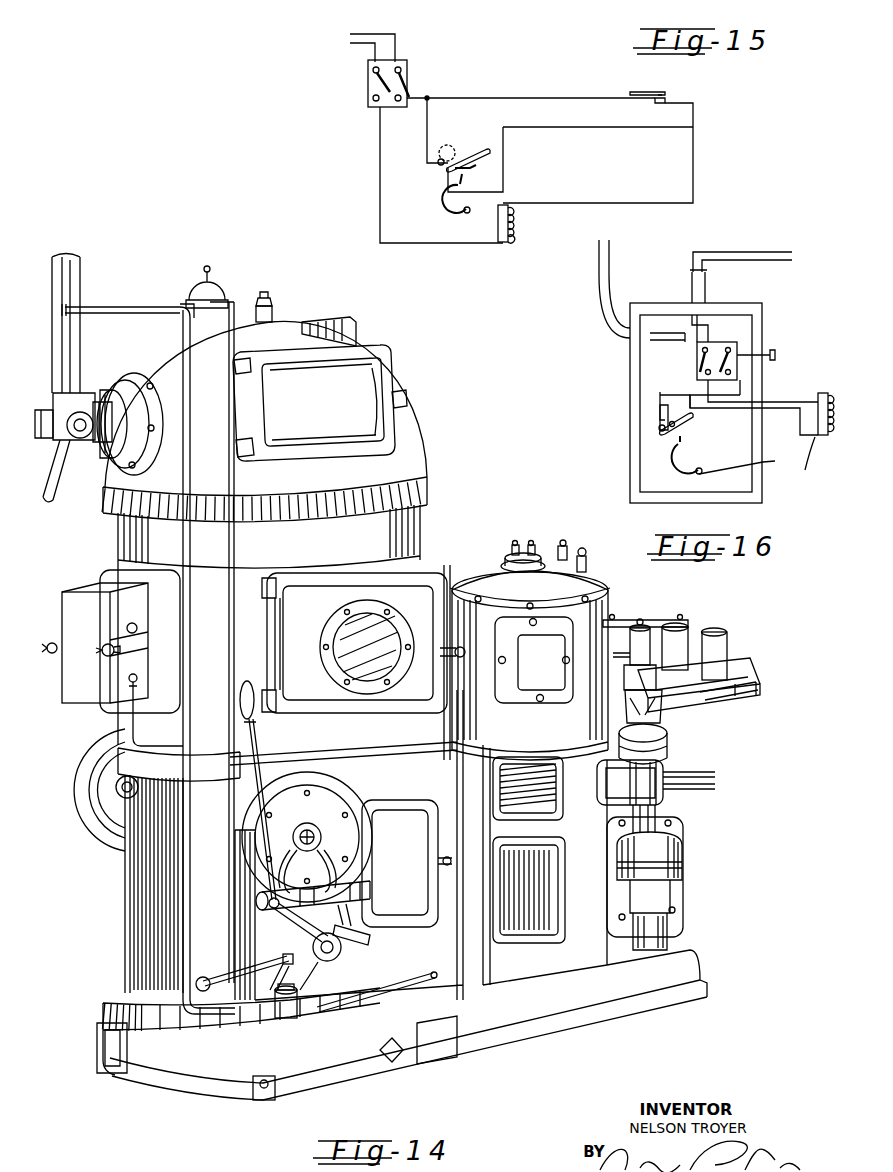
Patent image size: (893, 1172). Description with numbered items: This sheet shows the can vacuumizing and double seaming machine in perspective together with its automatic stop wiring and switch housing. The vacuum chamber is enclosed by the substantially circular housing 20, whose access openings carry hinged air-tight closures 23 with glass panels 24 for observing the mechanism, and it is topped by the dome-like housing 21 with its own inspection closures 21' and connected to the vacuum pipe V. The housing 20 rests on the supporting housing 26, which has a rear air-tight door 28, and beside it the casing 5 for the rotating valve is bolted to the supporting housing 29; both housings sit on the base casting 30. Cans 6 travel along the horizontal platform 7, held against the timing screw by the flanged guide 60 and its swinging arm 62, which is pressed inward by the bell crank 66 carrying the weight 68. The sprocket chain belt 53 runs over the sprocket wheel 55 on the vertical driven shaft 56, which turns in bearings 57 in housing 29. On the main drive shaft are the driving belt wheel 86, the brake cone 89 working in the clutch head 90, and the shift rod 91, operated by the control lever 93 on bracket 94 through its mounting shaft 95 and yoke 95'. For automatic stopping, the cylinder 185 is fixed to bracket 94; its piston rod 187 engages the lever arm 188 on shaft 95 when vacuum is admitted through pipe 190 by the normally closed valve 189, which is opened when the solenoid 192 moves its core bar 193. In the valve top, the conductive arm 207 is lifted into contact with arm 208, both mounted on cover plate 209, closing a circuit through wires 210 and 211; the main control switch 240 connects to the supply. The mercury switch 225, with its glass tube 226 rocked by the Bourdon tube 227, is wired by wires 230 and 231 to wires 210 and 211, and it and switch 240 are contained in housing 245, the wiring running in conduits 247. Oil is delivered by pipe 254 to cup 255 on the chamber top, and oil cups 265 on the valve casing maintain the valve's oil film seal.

In FIG. 14, the casing 5 is at (608, 604).
In FIG. 14, the cans 6 is at (727, 652).
In FIG. 14, the horizontal platform 7 is at (700, 722).
In FIG. 14, the circular housing 20 is at (428, 480).
In FIG. 14, the dome-like housing 21 is at (312, 318).
In FIG. 14, the closures 21' is at (329, 403).
In FIG. 14, the air-tight closures 23 is at (425, 578).
In FIG. 14, the glass panels 24 is at (392, 636).
In FIG. 14, the supporting housing 26 is at (150, 805).
In FIG. 14, the air-tight door 28 is at (155, 942).
In FIG. 14, the supporting housing 29 is at (650, 864).
In FIG. 14, the base casting 30 is at (195, 1090).
In FIG. 14, the sprocket chain belt 53 is at (705, 790).
In FIG. 14, the sprocket wheel 55 is at (676, 772).
In FIG. 14, the vertical driven shaft 56 is at (683, 828).
In FIG. 14, the bearings 57 is at (668, 762).
In FIG. 14, the flanged guide 60 is at (730, 702).
In FIG. 14, the horizontally swinging arm 62 is at (725, 674).
In FIG. 14, the bell crank 66 is at (690, 642).
In FIG. 14, the weight 68 is at (645, 632).
In FIG. 14, the driving belt wheel 86 is at (110, 800).
In FIG. 14, the brake cone 89 is at (342, 818).
In FIG. 14, the clutch head 90 is at (318, 795).
In FIG. 14, the shift rod 91 is at (322, 838).
In FIG. 14, the control lever 93 is at (262, 732).
In FIG. 14, the bracket 94 is at (292, 944).
In FIG. 14, the mounting shaft 95 is at (231, 900).
In FIG. 14, the yoke 95' is at (347, 870).
In FIG. 14, the cylinder 185 is at (338, 988).
In FIG. 14, the piston rod 187 is at (342, 955).
In FIG. 14, the lever arm 188 is at (370, 938).
In FIG. 14, the valve 189 is at (280, 962).
In FIG. 14, the pipe 190 is at (178, 306).
In FIG. 14, the solenoid 192 is at (292, 1018).
In FIG. 15, the solenoid 192 is at (513, 221).
In FIG. 16, the solenoid 192 is at (812, 462).
In FIG. 16, the core bar 193 is at (823, 394).
In FIG. 15, the yieldable electrically conductive arm 207 is at (690, 102).
In FIG. 15, the arm 208 is at (652, 91).
In FIG. 14, the cover plate 209 is at (548, 560).
In FIG. 14, the circuit wire 210 is at (513, 546).
In FIG. 15, the circuit wire 210 is at (693, 161).
In FIG. 16, the circuit wire 210 is at (766, 252).
In FIG. 14, the circuit wire 211 is at (534, 550).
In FIG. 15, the circuit wire 211 is at (557, 96).
In FIG. 16, the circuit wire 211 is at (775, 261).
In FIG. 14, the automatically actuated switch 225 is at (100, 598).
In FIG. 16, the automatically actuated switch 225 is at (652, 462).
In FIG. 15, the glass tube 226 is at (477, 147).
In FIG. 16, the glass tube 226 is at (655, 430).
In FIG. 15, the Bourdon tube 227 is at (433, 215).
In FIG. 16, the Bourdon tube 227 is at (740, 455).
In FIG. 15, the wire 230 is at (598, 128).
In FIG. 16, the wire 230 is at (665, 395).
In FIG. 15, the wire 231 is at (427, 140).
In FIG. 16, the wire 231 is at (660, 392).
In FIG. 15, the main control switch 240 is at (405, 66).
In FIG. 16, the main control switch 240 is at (742, 346).
In FIG. 16, the housing 245 is at (648, 407).
In FIG. 14, the conduits 247 is at (334, 557).
In FIG. 14, the pipe 254 is at (236, 542).
In FIG. 14, the cup 255 is at (218, 278).
In FIG. 14, the oil cups 265 is at (590, 562).
In FIG. 14, the pipe V is at (82, 287).